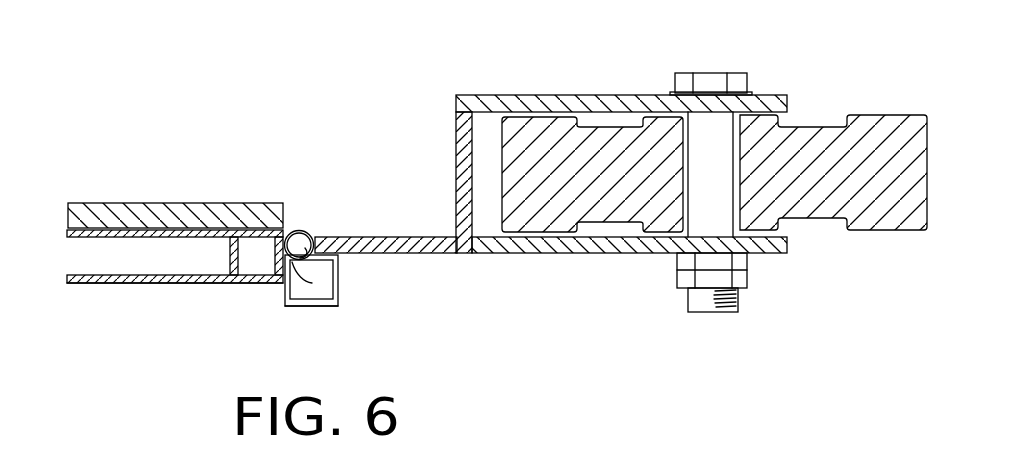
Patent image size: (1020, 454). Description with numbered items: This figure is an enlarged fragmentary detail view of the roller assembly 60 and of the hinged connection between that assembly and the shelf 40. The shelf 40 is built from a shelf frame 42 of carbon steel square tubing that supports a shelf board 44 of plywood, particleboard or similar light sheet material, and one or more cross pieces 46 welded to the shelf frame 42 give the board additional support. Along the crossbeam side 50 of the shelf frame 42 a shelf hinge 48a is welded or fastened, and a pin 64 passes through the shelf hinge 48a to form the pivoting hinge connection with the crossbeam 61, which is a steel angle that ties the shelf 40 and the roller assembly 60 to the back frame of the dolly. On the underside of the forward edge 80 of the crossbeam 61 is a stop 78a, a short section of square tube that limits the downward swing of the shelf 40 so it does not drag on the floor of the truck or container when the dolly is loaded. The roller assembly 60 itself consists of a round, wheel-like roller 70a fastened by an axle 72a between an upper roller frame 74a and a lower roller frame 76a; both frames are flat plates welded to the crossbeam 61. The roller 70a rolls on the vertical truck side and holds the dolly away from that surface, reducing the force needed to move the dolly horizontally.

The shelf 40 is at (178, 283).
The shelf frame 42 is at (252, 284).
The shelf board 44 is at (183, 203).
The cross piece 46 is at (108, 283).
The shelf hinge 48a is at (303, 247).
The crossbeam side 50 is at (296, 265).
The roller assembly 60 is at (621, 156).
The crossbeam 61 is at (432, 235).
The pin 64 is at (297, 231).
The roller 70a is at (888, 232).
The axle 72a is at (712, 73).
The upper roller frame 74a is at (520, 95).
The lower roller frame 76a is at (560, 253).
The stop 78a is at (332, 307).
The forward edge 80 is at (298, 262).